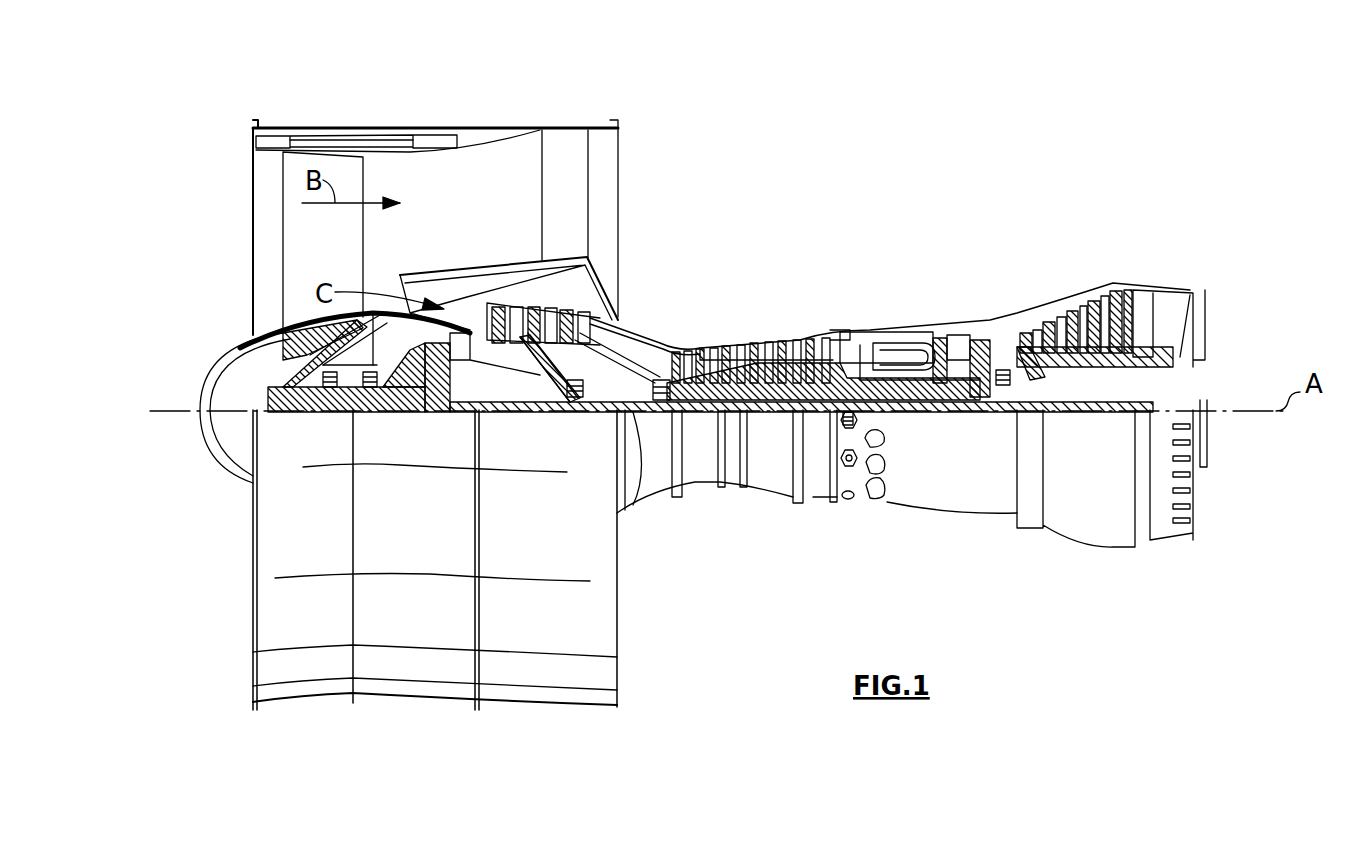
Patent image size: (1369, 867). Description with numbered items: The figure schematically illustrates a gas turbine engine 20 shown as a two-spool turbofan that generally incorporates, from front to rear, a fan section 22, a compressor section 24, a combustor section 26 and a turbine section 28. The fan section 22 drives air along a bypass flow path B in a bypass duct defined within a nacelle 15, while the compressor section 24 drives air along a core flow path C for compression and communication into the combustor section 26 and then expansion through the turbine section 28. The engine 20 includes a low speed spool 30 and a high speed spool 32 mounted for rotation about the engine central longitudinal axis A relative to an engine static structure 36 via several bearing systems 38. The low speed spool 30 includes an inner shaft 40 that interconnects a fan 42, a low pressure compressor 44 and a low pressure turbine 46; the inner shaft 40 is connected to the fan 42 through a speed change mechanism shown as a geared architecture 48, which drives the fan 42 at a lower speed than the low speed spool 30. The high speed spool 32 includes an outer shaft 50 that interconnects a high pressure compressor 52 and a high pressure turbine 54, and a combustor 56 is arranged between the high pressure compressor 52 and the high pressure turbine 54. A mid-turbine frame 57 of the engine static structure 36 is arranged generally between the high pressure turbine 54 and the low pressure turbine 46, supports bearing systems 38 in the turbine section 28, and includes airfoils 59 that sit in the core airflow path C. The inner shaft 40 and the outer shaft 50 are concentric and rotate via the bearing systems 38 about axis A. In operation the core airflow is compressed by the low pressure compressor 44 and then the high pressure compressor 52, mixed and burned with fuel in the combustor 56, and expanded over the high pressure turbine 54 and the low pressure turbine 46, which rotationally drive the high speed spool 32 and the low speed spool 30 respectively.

The nacelle 15 is at (435, 130).
The gas turbine engine 20 is at (895, 178).
The fan section 22 is at (362, 120).
The compressor section 24 is at (663, 322).
The combustor section 26 is at (888, 306).
The turbine section 28 is at (1111, 290).
The low speed spool 30 is at (773, 415).
The high speed spool 32 is at (813, 350).
The engine static structure 36 is at (813, 495).
The bearing systems 38 is at (572, 397).
The inner shaft 40 is at (642, 500).
The fan 42 is at (435, 431).
The low pressure compressor 44 is at (500, 340).
The low pressure turbine 46 is at (1082, 300).
The geared architecture 48 is at (450, 393).
The outer shaft 50 is at (893, 405).
The high pressure compressor 52 is at (748, 385).
The high pressure turbine 54 is at (957, 335).
The combustor 56 is at (890, 355).
The mid-turbine frame 57 is at (1000, 336).
The airfoils 59 is at (1020, 366).